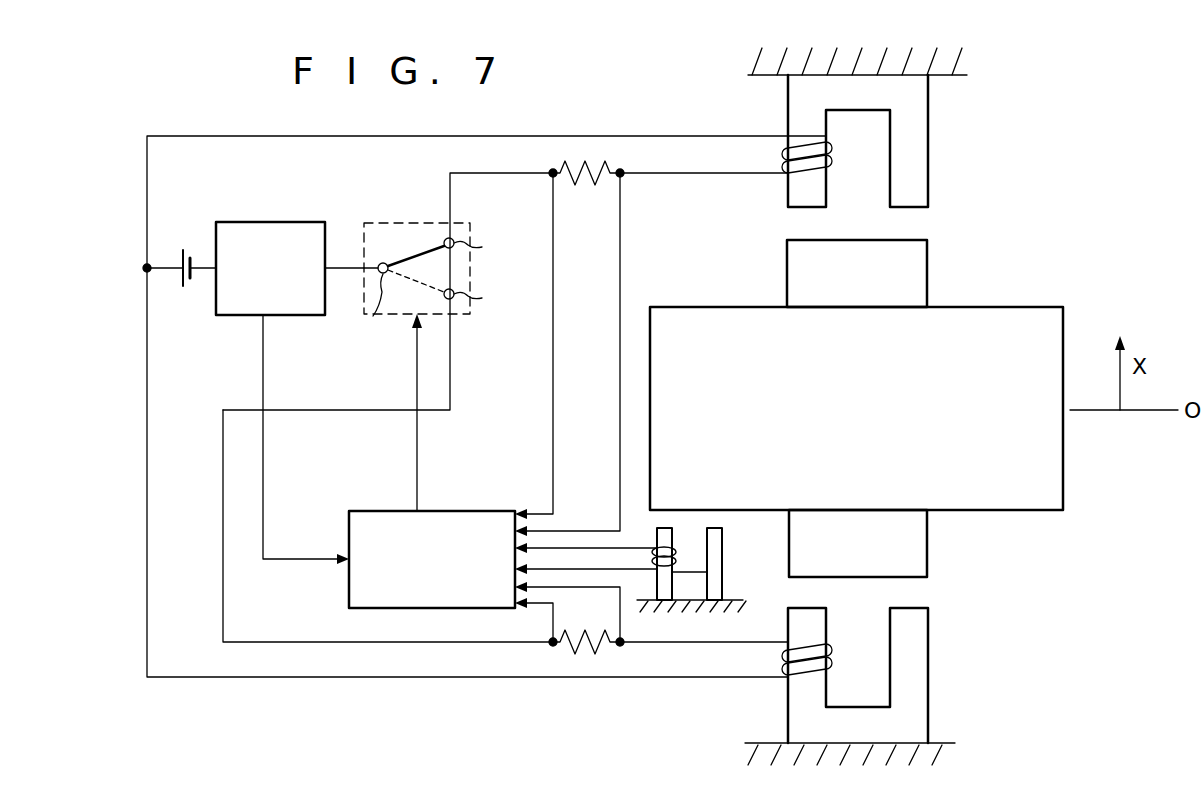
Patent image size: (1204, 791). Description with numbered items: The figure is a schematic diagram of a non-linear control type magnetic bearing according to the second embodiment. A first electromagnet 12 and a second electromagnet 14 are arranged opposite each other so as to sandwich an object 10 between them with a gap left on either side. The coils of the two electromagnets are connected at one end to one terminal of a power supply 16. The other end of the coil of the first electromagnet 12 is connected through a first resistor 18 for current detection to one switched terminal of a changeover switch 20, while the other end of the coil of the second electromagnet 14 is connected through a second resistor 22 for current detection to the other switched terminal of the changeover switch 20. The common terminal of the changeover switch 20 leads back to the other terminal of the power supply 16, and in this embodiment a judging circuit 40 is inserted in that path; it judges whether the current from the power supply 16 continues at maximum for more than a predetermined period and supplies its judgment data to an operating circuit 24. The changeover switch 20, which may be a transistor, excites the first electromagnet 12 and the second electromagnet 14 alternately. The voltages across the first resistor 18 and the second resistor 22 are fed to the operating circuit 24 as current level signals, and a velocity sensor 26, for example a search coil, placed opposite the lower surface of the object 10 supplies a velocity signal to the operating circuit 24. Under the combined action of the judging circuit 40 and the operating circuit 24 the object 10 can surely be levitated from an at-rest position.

The object 10 is at (986, 307).
The first electromagnet 12 is at (928, 160).
The second electromagnet 14 is at (928, 655).
The power supply 16 is at (179, 228).
The first resistor 18 is at (597, 162).
The changeover switch 20 is at (408, 222).
The second resistor 22 is at (610, 652).
The operating circuit 24 is at (484, 524).
The velocity sensor 26 is at (722, 560).
The judging circuit 40 is at (285, 222).